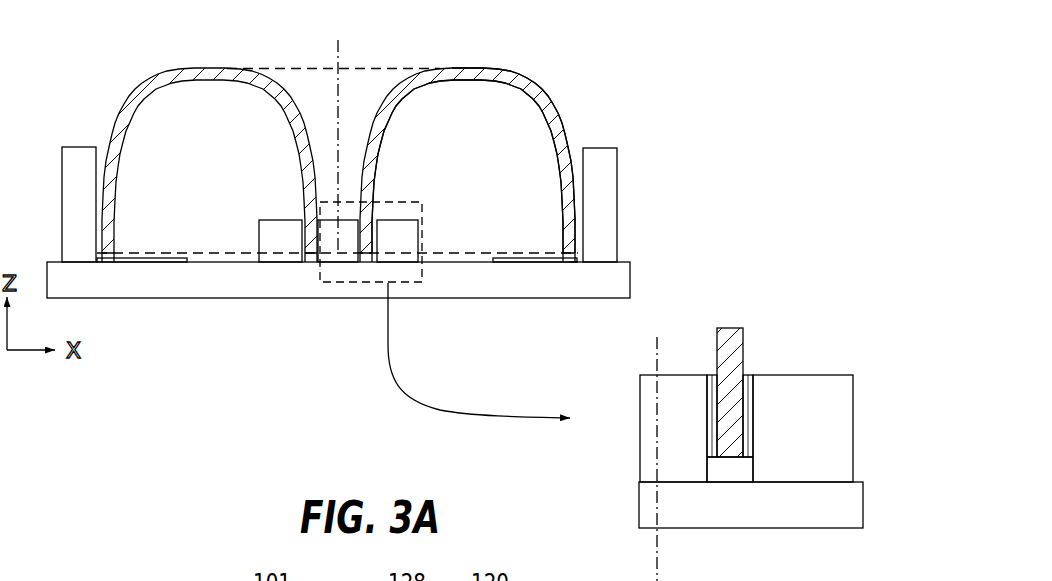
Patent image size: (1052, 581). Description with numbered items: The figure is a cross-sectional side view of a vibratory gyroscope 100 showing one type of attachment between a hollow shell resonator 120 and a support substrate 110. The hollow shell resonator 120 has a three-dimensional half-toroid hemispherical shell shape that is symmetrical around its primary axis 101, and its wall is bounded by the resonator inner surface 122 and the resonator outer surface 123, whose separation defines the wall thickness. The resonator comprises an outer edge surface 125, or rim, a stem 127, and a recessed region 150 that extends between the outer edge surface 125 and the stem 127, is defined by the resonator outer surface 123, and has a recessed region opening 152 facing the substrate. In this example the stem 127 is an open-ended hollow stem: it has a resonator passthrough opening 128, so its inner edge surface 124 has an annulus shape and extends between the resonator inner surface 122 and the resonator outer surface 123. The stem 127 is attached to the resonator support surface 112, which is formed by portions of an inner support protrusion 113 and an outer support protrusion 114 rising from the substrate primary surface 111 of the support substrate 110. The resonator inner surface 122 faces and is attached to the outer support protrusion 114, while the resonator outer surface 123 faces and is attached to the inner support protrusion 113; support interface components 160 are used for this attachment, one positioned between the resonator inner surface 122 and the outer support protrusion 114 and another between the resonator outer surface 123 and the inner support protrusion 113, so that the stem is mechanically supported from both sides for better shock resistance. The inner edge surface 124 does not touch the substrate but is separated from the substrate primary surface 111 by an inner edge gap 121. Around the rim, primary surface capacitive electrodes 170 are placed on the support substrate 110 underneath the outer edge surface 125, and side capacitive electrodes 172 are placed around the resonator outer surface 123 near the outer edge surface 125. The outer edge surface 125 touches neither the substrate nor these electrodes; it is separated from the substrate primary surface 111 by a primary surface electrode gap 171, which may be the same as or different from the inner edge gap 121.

The vibratory gyroscope 100 is at (116, 82).
The primary axis 101 is at (336, 50).
The support substrate 110 is at (617, 283).
The substrate primary surface 111 is at (747, 473).
The resonator support surface 112 is at (717, 409).
The inner support protrusion 113 is at (327, 263).
The outer support protrusion 114 is at (405, 247).
The hollow shell resonator 120 is at (471, 72).
The inner edge gap 121 is at (710, 472).
The resonator inner surface 122 is at (534, 128).
The resonator outer surface 123 is at (520, 77).
The inner edge surface 124 is at (729, 465).
The outer edge surface 125 is at (572, 264).
The stem 127 is at (303, 196).
The resonator passthrough opening 128 is at (351, 107).
The recessed region 150 is at (523, 160).
The recessed region opening 152 is at (469, 258).
The support interface component 160 is at (714, 443).
The primary surface capacitive electrode 170 is at (513, 263).
The primary surface electrode gap 171 is at (573, 266).
The side capacitive electrode 172 is at (598, 211).